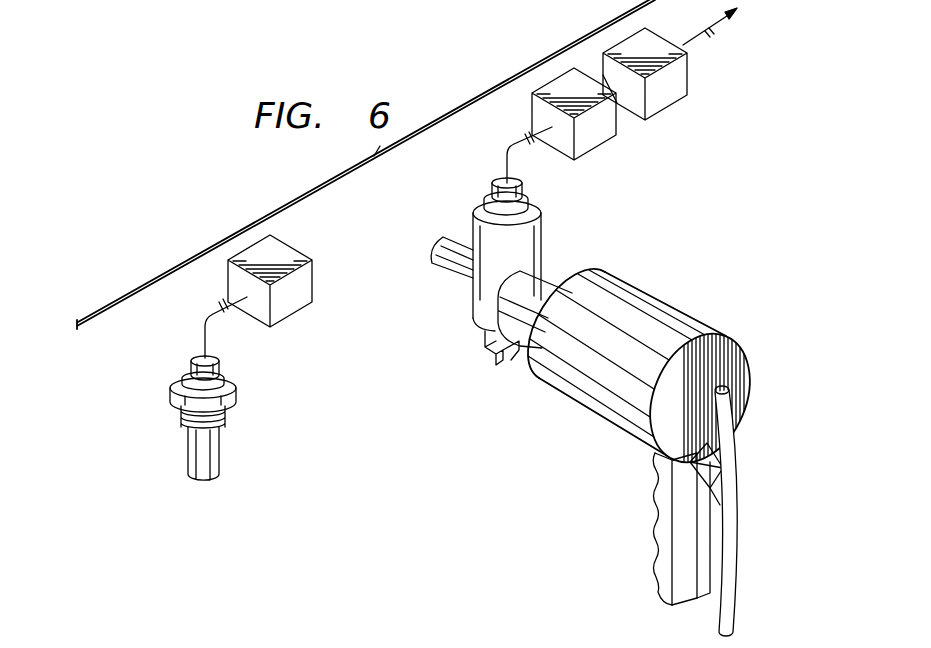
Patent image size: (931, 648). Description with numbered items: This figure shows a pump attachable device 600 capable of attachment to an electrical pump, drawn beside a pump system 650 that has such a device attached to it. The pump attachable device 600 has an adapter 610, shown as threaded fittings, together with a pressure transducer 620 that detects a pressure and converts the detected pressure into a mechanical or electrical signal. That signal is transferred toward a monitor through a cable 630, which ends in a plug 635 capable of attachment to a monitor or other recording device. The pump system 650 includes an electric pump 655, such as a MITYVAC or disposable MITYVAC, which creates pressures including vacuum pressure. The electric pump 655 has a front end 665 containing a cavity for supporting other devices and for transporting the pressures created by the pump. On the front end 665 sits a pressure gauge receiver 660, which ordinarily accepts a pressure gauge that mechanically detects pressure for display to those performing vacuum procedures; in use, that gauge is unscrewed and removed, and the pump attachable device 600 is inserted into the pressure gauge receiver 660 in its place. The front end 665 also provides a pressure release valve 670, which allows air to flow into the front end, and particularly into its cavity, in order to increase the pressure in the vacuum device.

The pump attachable device 600 is at (292, 389).
The adapter 610 is at (180, 411).
The pressure transducer 620 is at (187, 452).
The cable 630 is at (204, 343).
The plug 635 is at (313, 280).
The pump system 650 is at (750, 186).
The electric pump 655 is at (680, 305).
The pressure gauge receiver 660 is at (478, 230).
The front end 665 is at (478, 300).
The pressure release valve 670 is at (494, 345).